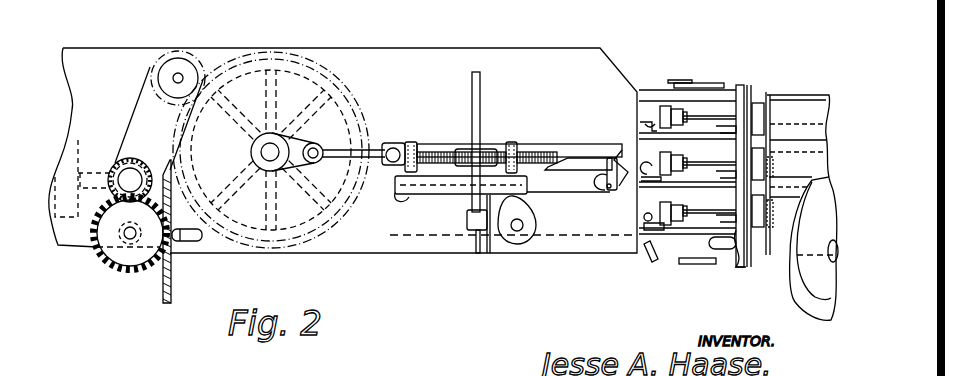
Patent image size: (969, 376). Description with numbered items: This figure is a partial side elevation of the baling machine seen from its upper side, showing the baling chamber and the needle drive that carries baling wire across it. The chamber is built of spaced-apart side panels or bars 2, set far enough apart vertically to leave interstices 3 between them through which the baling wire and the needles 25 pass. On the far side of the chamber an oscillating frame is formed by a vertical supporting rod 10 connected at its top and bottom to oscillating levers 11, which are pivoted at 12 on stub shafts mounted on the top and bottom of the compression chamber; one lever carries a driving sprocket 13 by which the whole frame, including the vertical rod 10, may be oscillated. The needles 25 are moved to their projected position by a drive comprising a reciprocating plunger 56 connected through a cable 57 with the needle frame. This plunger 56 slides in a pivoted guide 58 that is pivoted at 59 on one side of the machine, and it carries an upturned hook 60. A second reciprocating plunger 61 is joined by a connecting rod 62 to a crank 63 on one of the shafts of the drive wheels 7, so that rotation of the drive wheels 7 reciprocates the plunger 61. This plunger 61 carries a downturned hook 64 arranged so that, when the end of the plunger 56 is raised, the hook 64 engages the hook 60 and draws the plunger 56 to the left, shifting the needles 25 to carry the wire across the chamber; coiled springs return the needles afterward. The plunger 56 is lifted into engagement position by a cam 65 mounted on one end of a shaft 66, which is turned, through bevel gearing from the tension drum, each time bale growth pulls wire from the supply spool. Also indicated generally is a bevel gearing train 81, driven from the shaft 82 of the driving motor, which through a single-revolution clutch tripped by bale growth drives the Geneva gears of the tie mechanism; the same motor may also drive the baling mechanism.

The side panels or bars 2 is at (818, 96).
The interstices 3 is at (798, 113).
The drive wheels 7 is at (293, 52).
The vertical supporting rod 10 is at (747, 90).
The oscillating levers 11 is at (723, 261).
The pivot 12 is at (686, 264).
The driving sprocket 13 is at (674, 81).
The needles 25 is at (641, 123).
The reciprocating plunger 56 is at (575, 186).
The cable 57 is at (628, 215).
The pivoted guide 58 is at (443, 194).
The pivot 59 is at (386, 210).
The upturned hook 60 is at (603, 195).
The second reciprocating plunger 61 is at (558, 145).
The connecting rod 62 is at (366, 151).
The crank 63 is at (297, 143).
The downturned hook 64 is at (628, 175).
The cam 65 is at (518, 231).
The shaft 66 is at (521, 226).
The bevel gearing train 81 is at (145, 237).
The shaft of the driving motor 82 is at (95, 182).